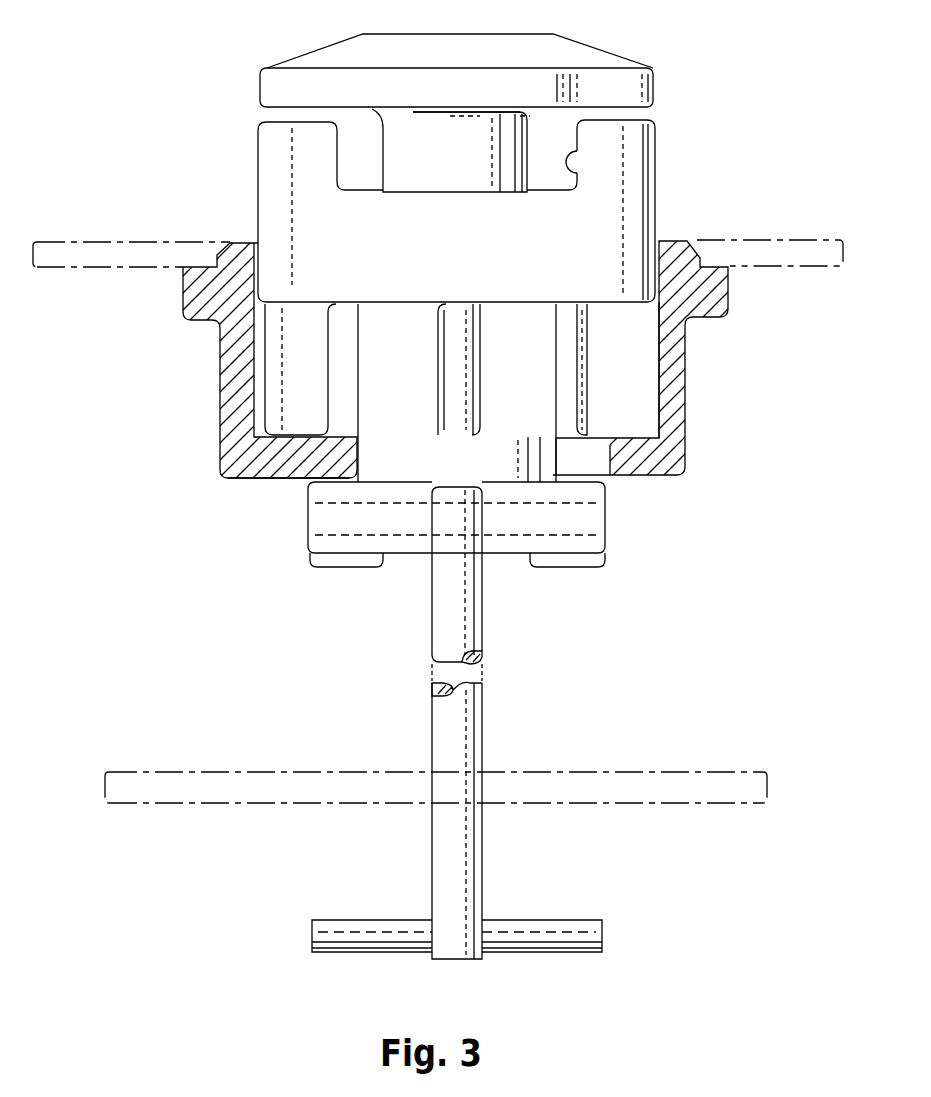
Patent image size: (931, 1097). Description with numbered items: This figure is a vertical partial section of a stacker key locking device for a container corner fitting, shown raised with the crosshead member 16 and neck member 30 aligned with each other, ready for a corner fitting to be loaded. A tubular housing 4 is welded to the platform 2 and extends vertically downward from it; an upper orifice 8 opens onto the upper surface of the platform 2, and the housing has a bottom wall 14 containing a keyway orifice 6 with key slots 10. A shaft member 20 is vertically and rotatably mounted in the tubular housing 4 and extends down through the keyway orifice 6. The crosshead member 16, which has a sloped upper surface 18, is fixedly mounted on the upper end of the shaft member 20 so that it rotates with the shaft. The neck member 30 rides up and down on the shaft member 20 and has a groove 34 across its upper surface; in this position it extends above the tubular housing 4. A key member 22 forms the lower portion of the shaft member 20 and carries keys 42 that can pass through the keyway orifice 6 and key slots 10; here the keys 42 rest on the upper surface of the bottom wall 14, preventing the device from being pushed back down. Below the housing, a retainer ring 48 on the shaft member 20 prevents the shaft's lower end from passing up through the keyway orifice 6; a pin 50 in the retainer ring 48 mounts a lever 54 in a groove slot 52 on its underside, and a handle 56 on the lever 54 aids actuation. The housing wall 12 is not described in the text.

The platform 2 is at (782, 240).
The tubular housing 4 is at (678, 395).
The keyway orifice 6 is at (557, 455).
The upper orifice 8 is at (256, 240).
The key slots 10 is at (597, 445).
The housing wall 12 is at (647, 353).
The bottom wall 14 is at (273, 467).
The crosshead member 16 is at (278, 90).
The sloped upper surface 18 is at (323, 49).
The shaft member 20 is at (398, 127).
The key member 22 is at (380, 385).
The neck member 30 is at (620, 212).
The groove 34 is at (563, 157).
The keys 42 is at (457, 362).
The retainer ring 48 is at (328, 545).
The pin 50 is at (337, 503).
The groove slot 52 is at (485, 557).
The lever 54 is at (447, 722).
The handle 56 is at (575, 925).